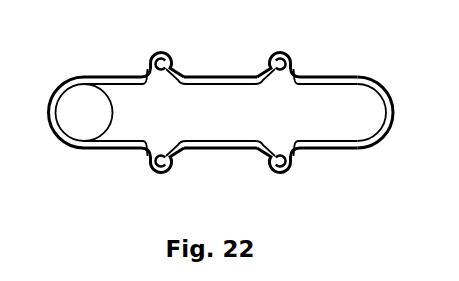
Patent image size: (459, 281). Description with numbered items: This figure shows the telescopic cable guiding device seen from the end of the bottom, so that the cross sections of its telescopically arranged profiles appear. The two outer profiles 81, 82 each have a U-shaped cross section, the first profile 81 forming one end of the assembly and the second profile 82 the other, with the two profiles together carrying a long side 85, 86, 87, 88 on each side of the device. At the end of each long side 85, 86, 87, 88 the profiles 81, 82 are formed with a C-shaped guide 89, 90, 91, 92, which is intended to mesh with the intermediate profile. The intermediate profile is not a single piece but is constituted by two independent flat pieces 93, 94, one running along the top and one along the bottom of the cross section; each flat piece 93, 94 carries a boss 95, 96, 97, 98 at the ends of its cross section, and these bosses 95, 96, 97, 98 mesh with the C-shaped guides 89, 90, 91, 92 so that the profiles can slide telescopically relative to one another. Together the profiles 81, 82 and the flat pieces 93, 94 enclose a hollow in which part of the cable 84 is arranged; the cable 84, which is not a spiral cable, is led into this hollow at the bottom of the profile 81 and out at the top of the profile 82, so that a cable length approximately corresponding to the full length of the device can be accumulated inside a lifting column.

The profile 81 is at (55, 88).
The profile 82 is at (390, 128).
The cable 84 is at (75, 115).
The long side 85 is at (110, 73).
The long side 86 is at (110, 150).
The long side 87 is at (322, 72).
The long side 88 is at (325, 150).
The C-shaped guide 89 is at (148, 52).
The C-shaped guide 90 is at (148, 170).
The C-shaped guide 91 is at (288, 48).
The C-shaped guide 92 is at (295, 170).
The flat piece 93 is at (232, 73).
The flat piece 94 is at (233, 150).
The boss 95 is at (163, 53).
The boss 96 is at (278, 50).
The boss 97 is at (162, 167).
The boss 98 is at (280, 172).